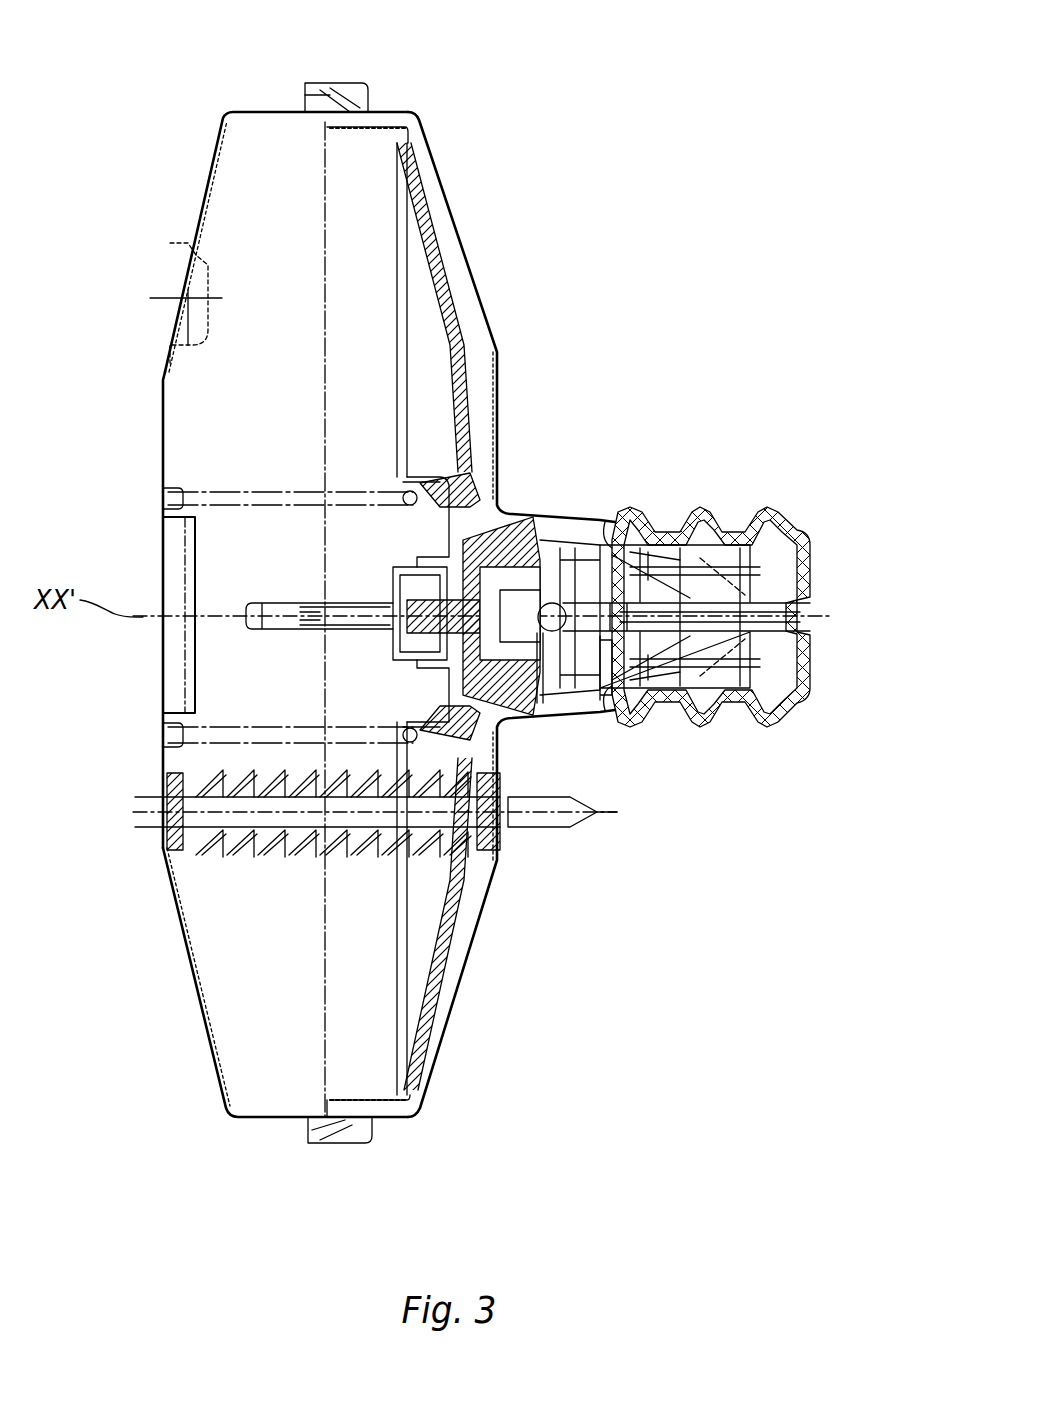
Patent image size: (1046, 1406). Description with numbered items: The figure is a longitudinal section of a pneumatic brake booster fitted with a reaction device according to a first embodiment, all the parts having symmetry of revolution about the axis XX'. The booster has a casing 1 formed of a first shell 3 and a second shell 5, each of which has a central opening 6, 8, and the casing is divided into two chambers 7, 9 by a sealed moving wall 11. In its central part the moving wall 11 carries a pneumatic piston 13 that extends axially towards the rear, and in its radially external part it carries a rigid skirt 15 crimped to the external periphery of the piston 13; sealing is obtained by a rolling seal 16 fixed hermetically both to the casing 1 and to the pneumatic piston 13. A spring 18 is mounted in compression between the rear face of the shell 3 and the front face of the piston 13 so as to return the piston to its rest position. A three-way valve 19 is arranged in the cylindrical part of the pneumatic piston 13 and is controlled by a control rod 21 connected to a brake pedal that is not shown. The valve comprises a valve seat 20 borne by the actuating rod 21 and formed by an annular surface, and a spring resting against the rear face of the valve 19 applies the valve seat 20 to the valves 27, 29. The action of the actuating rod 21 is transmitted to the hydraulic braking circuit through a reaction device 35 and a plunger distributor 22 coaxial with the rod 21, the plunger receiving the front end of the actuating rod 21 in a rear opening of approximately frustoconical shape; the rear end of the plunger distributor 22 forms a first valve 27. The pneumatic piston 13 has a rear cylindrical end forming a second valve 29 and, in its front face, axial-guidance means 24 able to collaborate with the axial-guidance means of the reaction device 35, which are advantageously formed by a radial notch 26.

The casing 1 is at (393, 86).
The first shell 3 is at (221, 124).
The second shell 5 is at (497, 296).
The central opening 6 is at (173, 707).
The chamber 7 is at (203, 180).
The central opening 8 is at (603, 523).
The chamber 9 is at (494, 402).
The sealed moving wall 11 is at (442, 220).
The pneumatic piston 13 is at (498, 723).
The rigid skirt 15 is at (440, 990).
The rolling seal 16 is at (383, 128).
The spring 18 is at (207, 497).
The three-way valve 19 is at (660, 527).
The valve seat 20 is at (660, 713).
The control rod 21 is at (815, 597).
The plunger distributor 22 is at (548, 717).
The axial-guidance means 24 is at (520, 520).
The radial notch 26 is at (557, 523).
The first valve 27 is at (645, 527).
The second valve 29 is at (632, 723).
The reaction device 35 is at (500, 490).